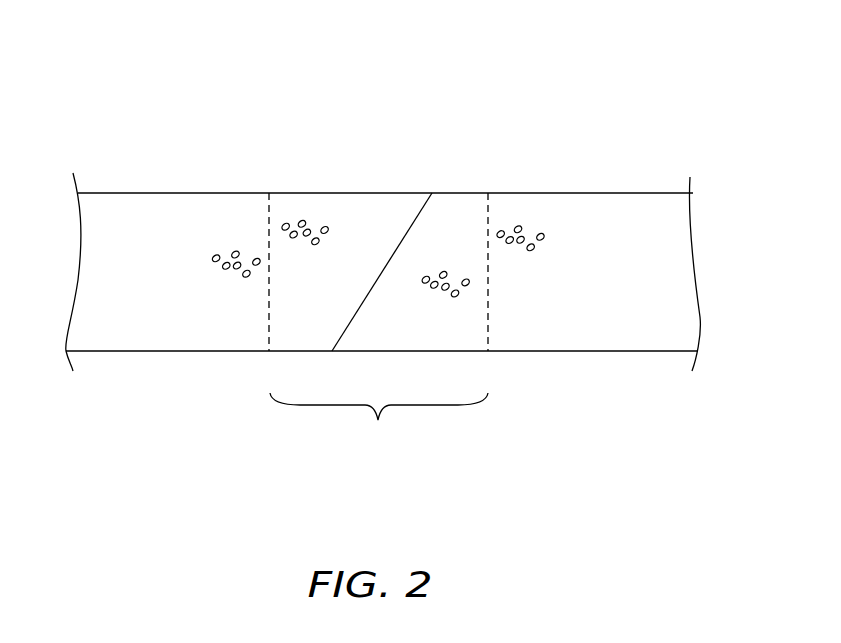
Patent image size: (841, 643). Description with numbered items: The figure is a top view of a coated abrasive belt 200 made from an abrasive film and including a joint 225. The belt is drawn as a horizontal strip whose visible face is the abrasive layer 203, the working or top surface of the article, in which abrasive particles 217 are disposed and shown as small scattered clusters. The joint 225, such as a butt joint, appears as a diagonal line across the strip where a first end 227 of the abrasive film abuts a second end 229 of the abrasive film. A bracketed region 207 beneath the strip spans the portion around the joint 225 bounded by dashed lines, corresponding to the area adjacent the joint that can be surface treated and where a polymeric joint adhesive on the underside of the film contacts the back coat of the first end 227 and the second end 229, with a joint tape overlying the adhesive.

The coated abrasive belt 200 is at (690, 50).
The abrasive layer 203 is at (630, 210).
The transition region 207 is at (378, 322).
The abrasive particles 217 is at (522, 228).
The joint 225 is at (353, 320).
The first end of the abrasive film 227 is at (452, 212).
The second end of the abrasive film 229 is at (357, 213).